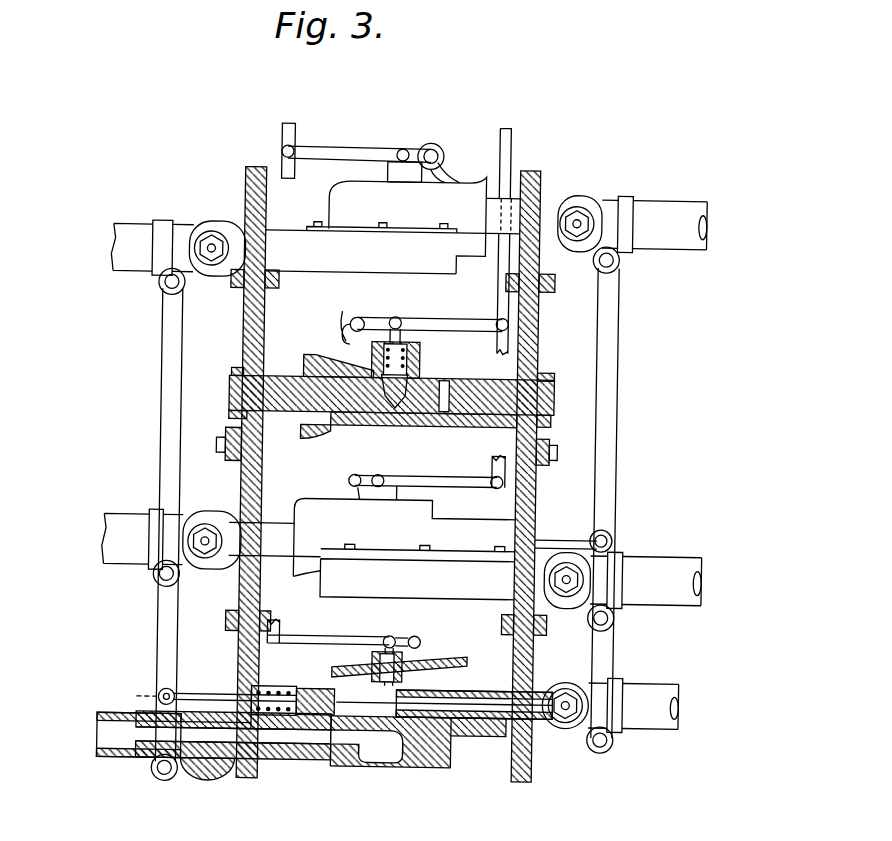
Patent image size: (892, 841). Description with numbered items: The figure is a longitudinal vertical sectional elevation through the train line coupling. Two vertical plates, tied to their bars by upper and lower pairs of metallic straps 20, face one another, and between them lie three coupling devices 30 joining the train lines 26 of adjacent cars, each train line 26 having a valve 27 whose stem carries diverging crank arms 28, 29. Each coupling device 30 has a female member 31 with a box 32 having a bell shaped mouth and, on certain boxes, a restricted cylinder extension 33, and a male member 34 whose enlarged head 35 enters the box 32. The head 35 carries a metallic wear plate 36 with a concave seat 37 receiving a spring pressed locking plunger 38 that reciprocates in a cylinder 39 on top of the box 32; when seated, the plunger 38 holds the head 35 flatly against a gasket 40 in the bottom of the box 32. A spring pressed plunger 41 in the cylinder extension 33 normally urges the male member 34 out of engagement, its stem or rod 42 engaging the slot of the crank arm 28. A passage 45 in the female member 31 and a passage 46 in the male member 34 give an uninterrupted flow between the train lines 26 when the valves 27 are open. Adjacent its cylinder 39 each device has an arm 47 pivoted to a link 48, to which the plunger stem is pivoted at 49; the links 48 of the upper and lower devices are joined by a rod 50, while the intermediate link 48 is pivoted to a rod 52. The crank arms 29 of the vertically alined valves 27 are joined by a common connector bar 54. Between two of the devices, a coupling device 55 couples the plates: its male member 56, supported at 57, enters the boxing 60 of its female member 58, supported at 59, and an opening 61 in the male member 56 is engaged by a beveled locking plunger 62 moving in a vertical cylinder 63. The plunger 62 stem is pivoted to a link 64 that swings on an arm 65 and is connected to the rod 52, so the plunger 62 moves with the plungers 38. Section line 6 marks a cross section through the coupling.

The section line VI-VI 6 is at (354, 702).
The metallic straps 20 is at (234, 290).
The train line 26 is at (657, 200).
The valve 27 is at (206, 764).
The crank arm 28 is at (613, 538).
The crank arm 29 is at (588, 614).
The coupling device 30 is at (455, 168).
The female member 31 is at (298, 752).
The box 32 is at (427, 668).
The cylinder extension 33 is at (268, 689).
The male member 34 is at (487, 719).
The enlarged head 35 is at (370, 766).
The metallic wear plate 36 is at (437, 764).
The concave recess or seat 37 is at (394, 766).
The locking plunger 38 is at (374, 668).
The cylinder 39 is at (382, 646).
The gasket 40 is at (398, 762).
The spring pressed plunger 41 is at (331, 716).
The stem or rod 42 is at (199, 703).
The passage 45 is at (279, 737).
The passage 46 is at (476, 702).
The arm 47 is at (424, 641).
The link 48 is at (438, 487).
The pivotal connection 49 is at (413, 637).
The rod 50 is at (291, 134).
The rod 52 is at (508, 146).
The common connector bar 54 is at (172, 447).
The coupling device 55 is at (320, 350).
The male member 56 is at (288, 418).
The support 57 is at (233, 376).
The female member 58 is at (470, 378).
The support 59 is at (555, 385).
The boxing 60 is at (323, 427).
The opening 61 is at (395, 409).
The beveled locking plunger 62 is at (384, 406).
The vertical cylinder 63 is at (413, 340).
The link 64 is at (376, 318).
The arm 65 is at (348, 312).